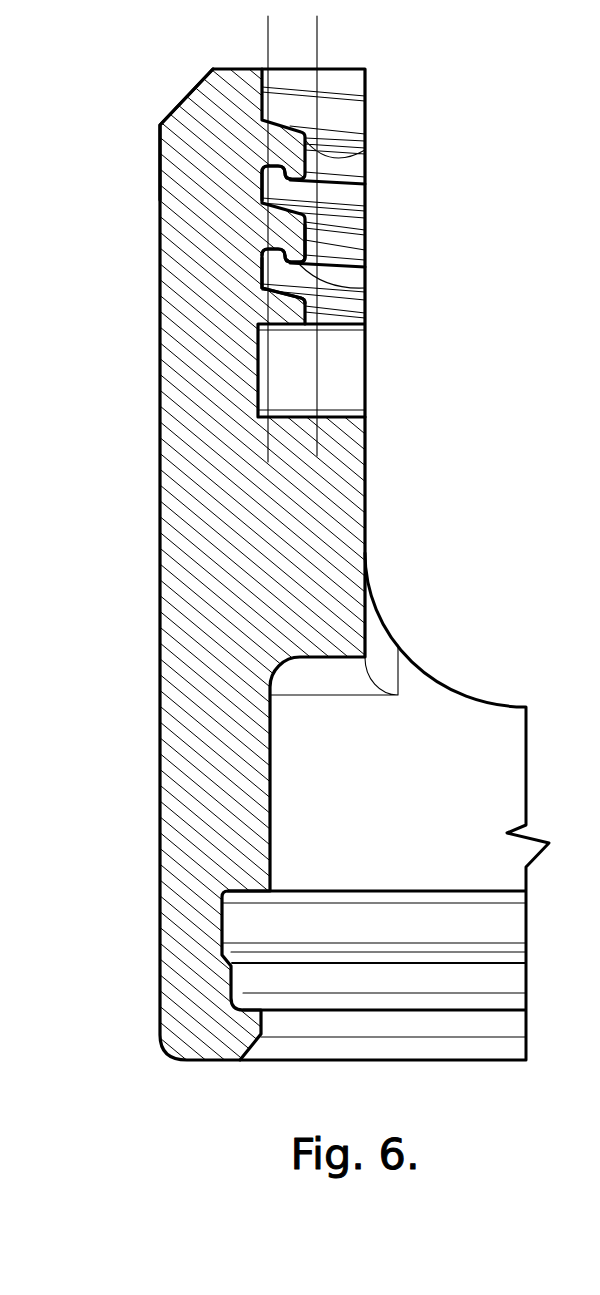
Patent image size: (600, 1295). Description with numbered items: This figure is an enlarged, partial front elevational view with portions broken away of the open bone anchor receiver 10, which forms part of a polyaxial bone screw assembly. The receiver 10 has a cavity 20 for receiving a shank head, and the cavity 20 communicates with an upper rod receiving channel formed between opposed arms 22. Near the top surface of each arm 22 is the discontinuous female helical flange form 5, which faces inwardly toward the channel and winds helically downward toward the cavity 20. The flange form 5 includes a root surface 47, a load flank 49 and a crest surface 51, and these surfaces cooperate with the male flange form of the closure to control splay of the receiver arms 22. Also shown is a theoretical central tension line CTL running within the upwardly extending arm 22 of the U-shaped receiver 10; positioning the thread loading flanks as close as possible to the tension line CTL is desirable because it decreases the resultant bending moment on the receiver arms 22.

The female helical flange form 5 is at (320, 155).
The open bone anchor receiver 10 is at (160, 498).
The cavity 20 is at (402, 1057).
The receiver arm 22 is at (160, 210).
The root surface 47 is at (262, 178).
The load flank 49 is at (303, 285).
The crest surface 51 is at (304, 253).
The central tension line CTL is at (268, 42).